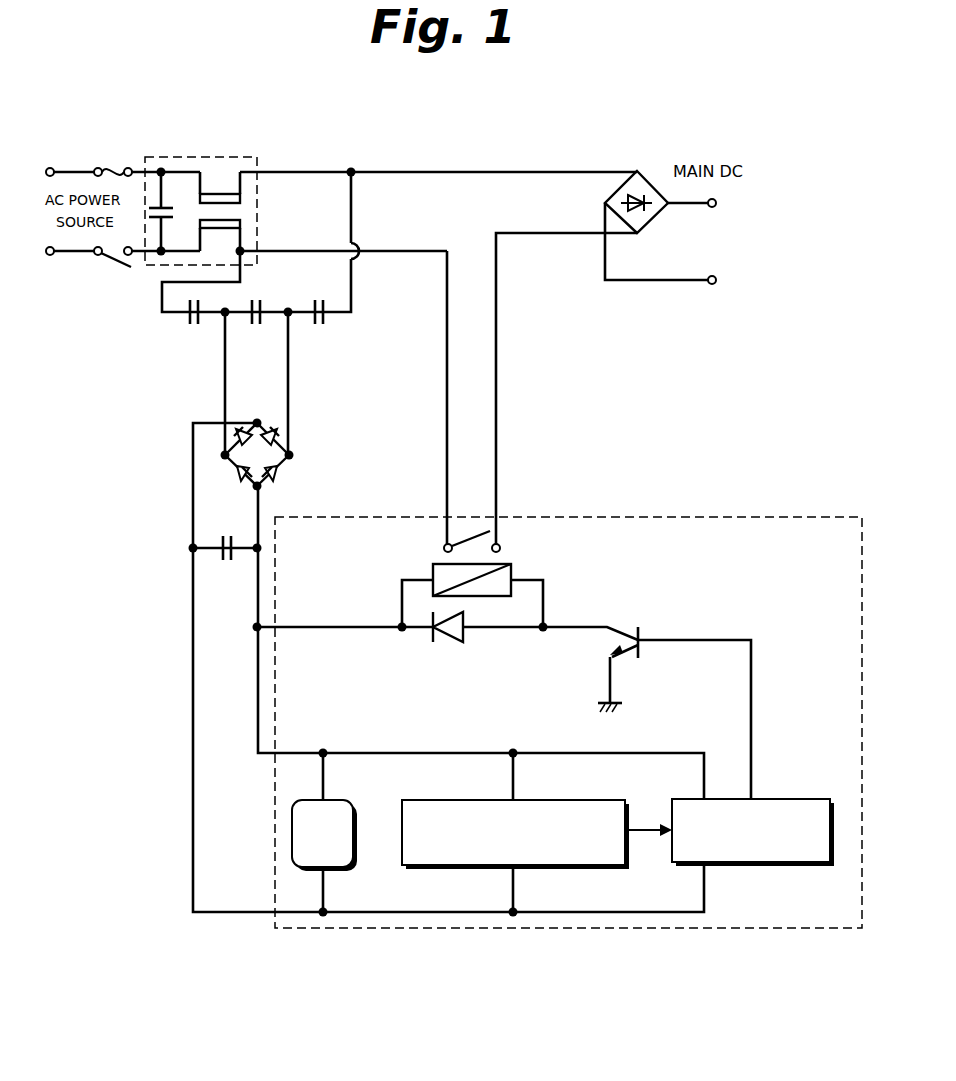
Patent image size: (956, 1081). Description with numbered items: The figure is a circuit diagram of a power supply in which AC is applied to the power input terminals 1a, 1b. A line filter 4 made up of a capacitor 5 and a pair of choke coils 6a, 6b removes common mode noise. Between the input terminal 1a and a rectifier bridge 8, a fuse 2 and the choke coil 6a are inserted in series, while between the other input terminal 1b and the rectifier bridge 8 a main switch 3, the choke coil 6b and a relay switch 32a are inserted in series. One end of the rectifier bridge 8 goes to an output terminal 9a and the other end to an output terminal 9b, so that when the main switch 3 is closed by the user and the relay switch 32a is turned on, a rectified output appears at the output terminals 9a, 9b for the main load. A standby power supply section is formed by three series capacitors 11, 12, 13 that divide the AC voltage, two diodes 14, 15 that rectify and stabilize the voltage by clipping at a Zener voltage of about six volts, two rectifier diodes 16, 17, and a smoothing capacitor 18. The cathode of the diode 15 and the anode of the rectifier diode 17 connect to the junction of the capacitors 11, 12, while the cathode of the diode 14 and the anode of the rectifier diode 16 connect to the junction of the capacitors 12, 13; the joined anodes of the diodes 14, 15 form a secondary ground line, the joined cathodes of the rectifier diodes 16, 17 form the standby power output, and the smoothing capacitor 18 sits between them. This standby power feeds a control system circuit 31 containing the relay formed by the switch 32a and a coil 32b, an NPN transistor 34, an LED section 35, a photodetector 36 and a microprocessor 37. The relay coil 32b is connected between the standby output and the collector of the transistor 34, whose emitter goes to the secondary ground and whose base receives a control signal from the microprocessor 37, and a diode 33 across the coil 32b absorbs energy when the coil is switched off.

The power input terminal 1a is at (50, 165).
The power input terminal 1b is at (50, 258).
The fuse 2 is at (113, 165).
The main switch 3 is at (112, 266).
The line filter 4 is at (238, 155).
The capacitor 5 is at (175, 211).
The choke coil 6a is at (224, 192).
The choke coil 6b is at (230, 219).
The rectifier bridge 8 is at (637, 170).
The output terminal 9a is at (720, 203).
The output terminal 9b is at (720, 280).
The capacitor 11 is at (193, 325).
The capacitor 12 is at (258, 325).
The capacitor 13 is at (322, 325).
The diode 14 is at (291, 442).
The diode 15 is at (232, 440).
The rectifier diode 16 is at (291, 470).
The rectifier diode 17 is at (246, 482).
The smoothing capacitor 18 is at (226, 562).
The control system circuit 31 is at (672, 516).
The relay switch 32a is at (470, 532).
The relay coil 32b is at (545, 571).
The diode 33 is at (460, 645).
The NPN transistor 34 is at (602, 642).
The LED section 35 is at (338, 800).
The photodetector 36 is at (545, 800).
The microprocessor 37 is at (810, 798).